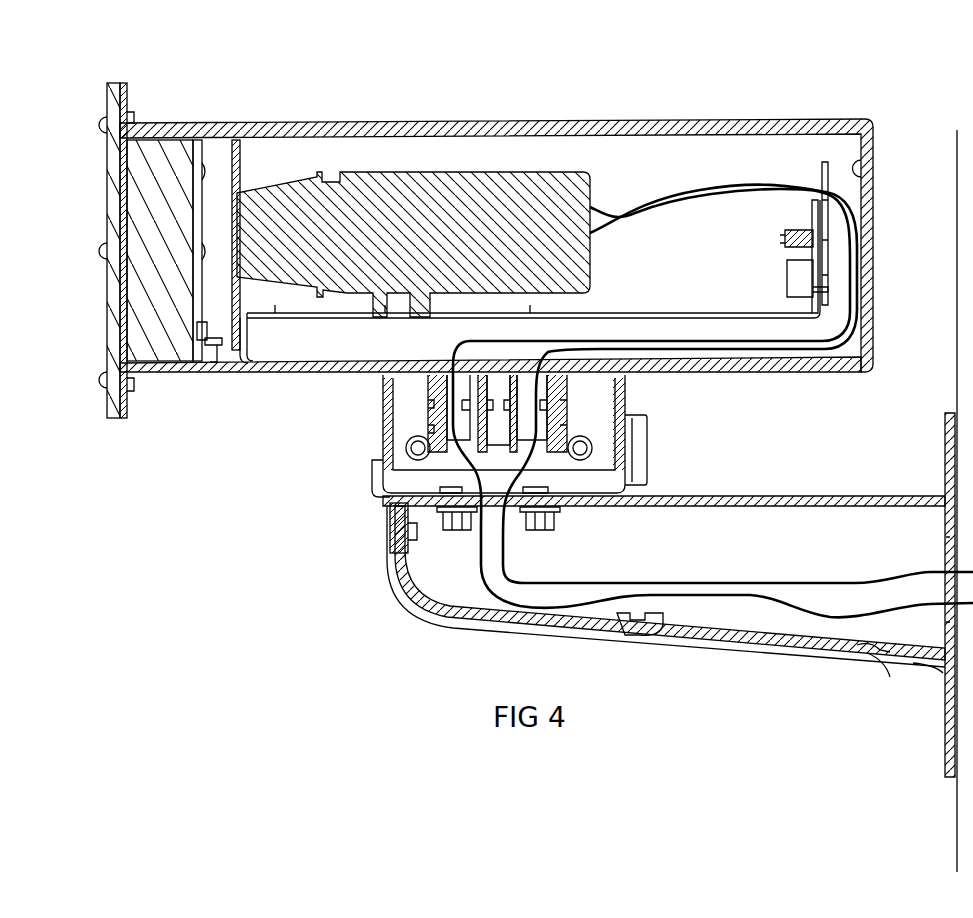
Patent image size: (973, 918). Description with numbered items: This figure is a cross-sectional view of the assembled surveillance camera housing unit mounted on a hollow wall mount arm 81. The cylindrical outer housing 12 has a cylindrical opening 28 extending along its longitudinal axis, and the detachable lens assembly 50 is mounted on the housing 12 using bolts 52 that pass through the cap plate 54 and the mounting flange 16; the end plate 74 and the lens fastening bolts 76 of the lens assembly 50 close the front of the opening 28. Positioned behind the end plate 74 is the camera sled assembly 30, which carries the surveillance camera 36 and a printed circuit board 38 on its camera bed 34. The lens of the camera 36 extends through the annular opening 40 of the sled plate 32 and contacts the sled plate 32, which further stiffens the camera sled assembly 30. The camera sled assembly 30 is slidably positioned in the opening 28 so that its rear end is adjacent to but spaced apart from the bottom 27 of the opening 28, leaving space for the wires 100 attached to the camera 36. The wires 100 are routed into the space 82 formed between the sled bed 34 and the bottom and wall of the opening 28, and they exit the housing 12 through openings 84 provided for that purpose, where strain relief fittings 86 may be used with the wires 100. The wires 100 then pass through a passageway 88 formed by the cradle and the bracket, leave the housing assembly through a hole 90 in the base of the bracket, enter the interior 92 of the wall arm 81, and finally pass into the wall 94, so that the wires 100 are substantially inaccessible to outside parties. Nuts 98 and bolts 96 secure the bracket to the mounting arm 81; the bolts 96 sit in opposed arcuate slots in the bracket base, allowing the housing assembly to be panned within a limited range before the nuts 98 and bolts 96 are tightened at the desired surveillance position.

The outer housing 12 is at (330, 124).
The mounting flange 16 is at (128, 90).
The bottom of opening 27 is at (873, 176).
The cylindrical opening 28 is at (770, 140).
The camera sled assembly 30 is at (670, 310).
The sled plate 32 is at (237, 180).
The camera bed 34 is at (605, 312).
The surveillance camera 36 is at (590, 192).
The printed circuit board 38 is at (823, 162).
The annular opening 40 is at (228, 292).
The lens assembly 50 is at (107, 167).
The bolts 52 is at (99, 123).
The cap plate 54 is at (107, 84).
The end plate 74 is at (201, 197).
The bolts 76 is at (205, 167).
The wall mount arm 81 is at (778, 495).
The space 82 is at (662, 362).
The openings 84 is at (530, 363).
The strain relief fittings 86 is at (432, 413).
The passageway 88 is at (425, 490).
The hole 90 is at (492, 508).
The interior of wall arm 92 is at (877, 658).
The wall 94 is at (957, 820).
The bolts 96 is at (443, 476).
The nuts 98 is at (447, 530).
The wires 100 is at (603, 218).